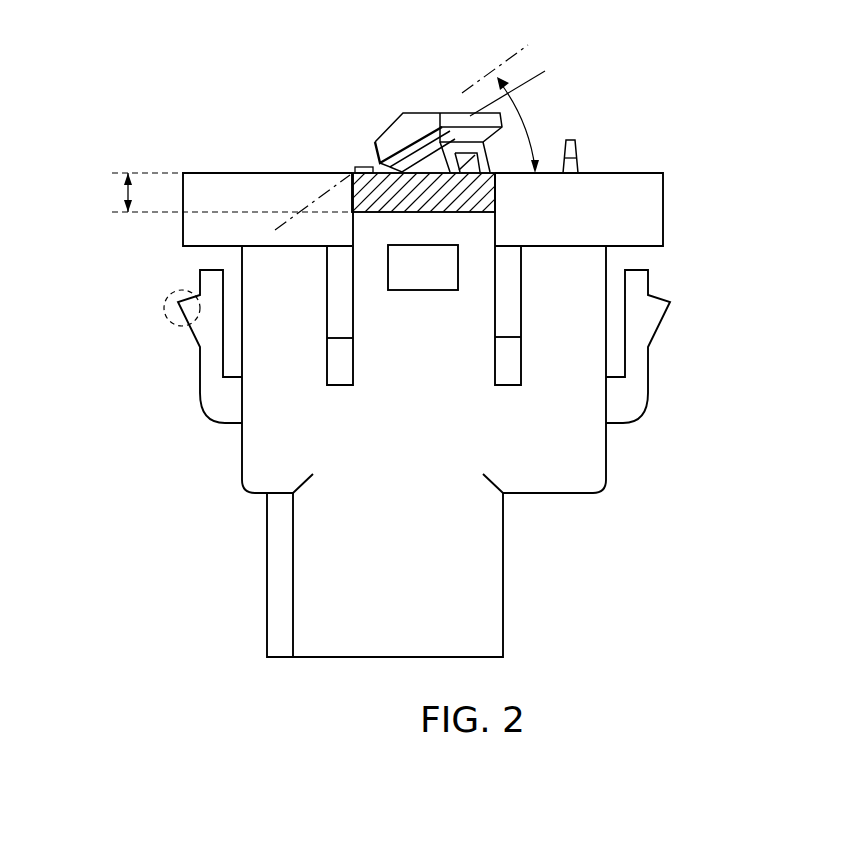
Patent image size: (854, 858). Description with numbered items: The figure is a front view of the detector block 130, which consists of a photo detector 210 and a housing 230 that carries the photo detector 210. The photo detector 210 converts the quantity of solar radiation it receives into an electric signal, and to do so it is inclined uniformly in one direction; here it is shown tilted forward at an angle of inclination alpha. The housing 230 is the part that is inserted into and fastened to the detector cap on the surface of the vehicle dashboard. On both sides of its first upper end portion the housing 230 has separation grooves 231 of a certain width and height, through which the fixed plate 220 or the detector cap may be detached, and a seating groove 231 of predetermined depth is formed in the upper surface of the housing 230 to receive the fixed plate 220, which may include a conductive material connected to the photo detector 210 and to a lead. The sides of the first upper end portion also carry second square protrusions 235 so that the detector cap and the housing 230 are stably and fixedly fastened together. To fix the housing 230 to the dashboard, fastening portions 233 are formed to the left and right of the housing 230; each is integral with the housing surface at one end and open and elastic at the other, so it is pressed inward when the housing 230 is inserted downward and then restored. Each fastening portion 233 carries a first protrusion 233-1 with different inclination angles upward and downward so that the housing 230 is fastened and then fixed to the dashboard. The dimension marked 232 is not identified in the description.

The detector block 130 is at (375, 35).
The photo detector 210 is at (447, 115).
The fixed plate 220 is at (355, 168).
The housing 230 is at (612, 464).
The separation groove 231 is at (482, 231).
The thickness of substrate 232 is at (125, 195).
The fastening portion 233 is at (208, 413).
The first protrusion 233-1 is at (165, 313).
The second square protrusion 235 is at (460, 267).